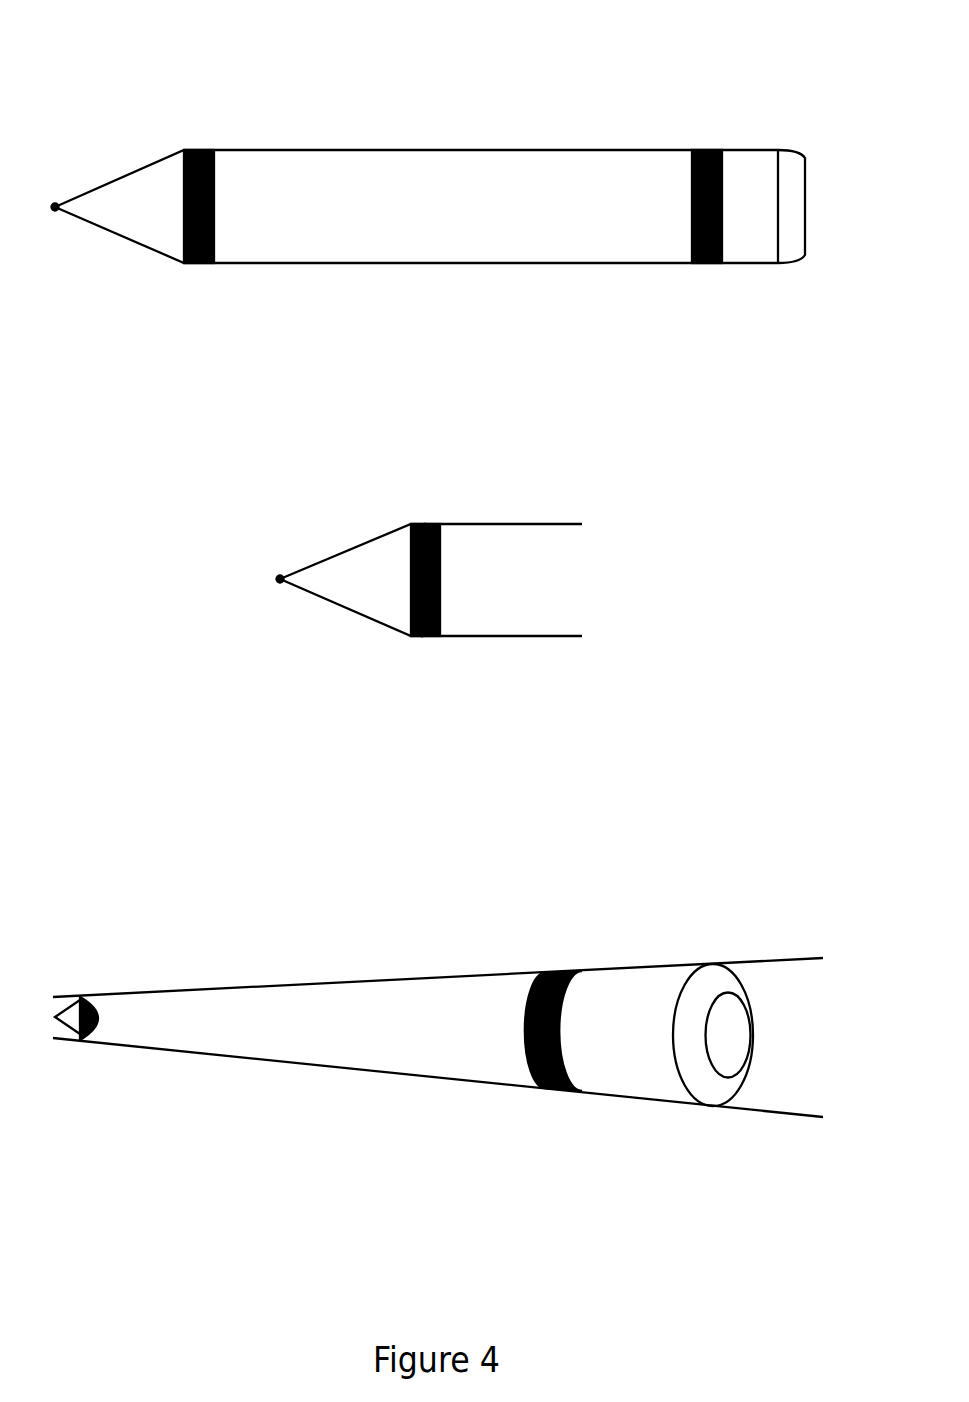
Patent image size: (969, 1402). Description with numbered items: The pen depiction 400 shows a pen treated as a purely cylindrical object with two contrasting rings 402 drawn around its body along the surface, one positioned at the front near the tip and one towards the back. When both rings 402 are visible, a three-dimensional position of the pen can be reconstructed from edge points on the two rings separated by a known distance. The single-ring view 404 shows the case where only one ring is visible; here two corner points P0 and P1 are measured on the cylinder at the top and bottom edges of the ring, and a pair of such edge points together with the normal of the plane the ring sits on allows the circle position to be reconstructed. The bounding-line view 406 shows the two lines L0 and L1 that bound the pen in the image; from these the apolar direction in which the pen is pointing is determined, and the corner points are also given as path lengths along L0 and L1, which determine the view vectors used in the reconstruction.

The pen with two contrasting rings 400 is at (108, 26).
The rings 402 is at (482, 150).
The single visible ring 404 is at (470, 522).
The lines bounding the pen 406 is at (478, 970).
The first corner point P0 is at (423, 522).
The second corner point P1 is at (420, 638).
The first bounding line L0 is at (398, 977).
The second bounding line L1 is at (385, 1072).